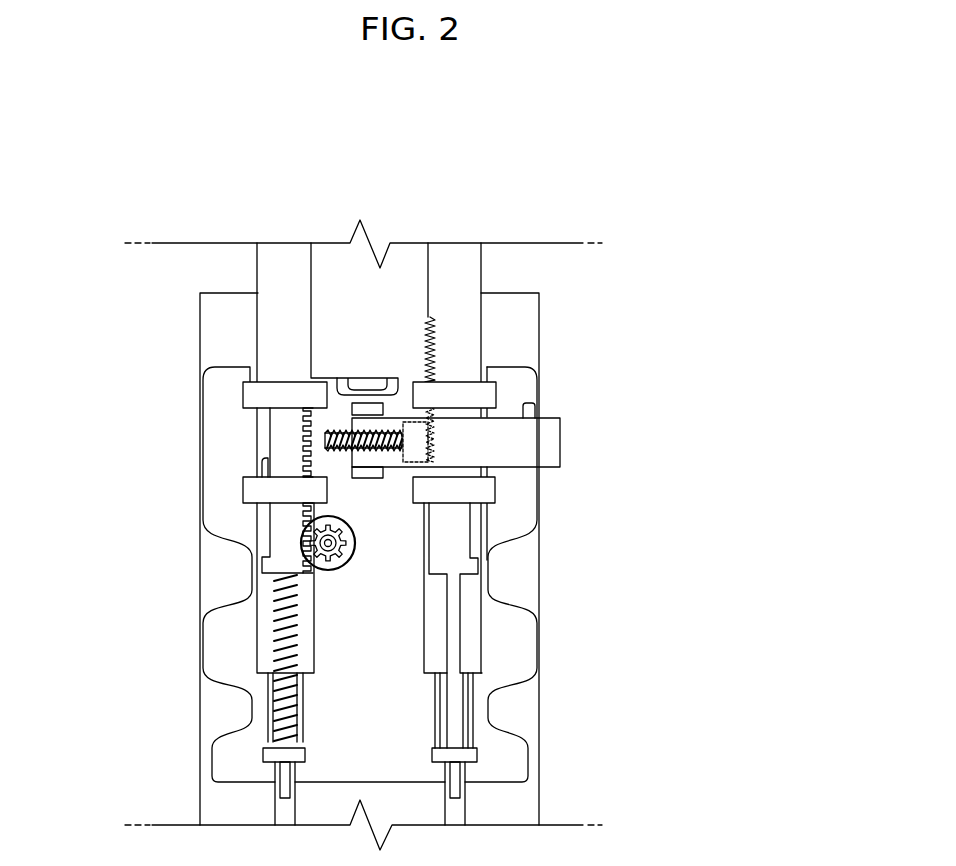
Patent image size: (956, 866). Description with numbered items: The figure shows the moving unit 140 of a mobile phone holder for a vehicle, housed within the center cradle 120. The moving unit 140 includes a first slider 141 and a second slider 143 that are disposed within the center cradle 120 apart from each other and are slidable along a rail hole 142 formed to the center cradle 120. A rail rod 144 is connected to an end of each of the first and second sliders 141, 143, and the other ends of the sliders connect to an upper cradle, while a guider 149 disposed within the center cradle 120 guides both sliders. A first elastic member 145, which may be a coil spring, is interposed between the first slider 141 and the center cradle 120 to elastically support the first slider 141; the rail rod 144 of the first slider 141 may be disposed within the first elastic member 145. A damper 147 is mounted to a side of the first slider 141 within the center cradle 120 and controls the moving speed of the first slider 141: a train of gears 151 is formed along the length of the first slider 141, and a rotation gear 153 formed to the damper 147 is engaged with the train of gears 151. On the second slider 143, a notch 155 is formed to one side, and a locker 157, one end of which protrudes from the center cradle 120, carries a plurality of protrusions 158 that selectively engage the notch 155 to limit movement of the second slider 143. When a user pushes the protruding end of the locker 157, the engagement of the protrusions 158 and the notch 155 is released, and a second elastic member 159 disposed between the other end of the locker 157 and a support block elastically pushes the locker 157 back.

The center cradle 120 is at (510, 323).
The moving unit 140 is at (138, 542).
The first slider 141 is at (275, 321).
The rail hole 142 is at (262, 655).
The second slider 143 is at (463, 323).
The rail rod 144 is at (272, 590).
The first elastic member 145 is at (276, 700).
The damper 147 is at (335, 582).
The guider 149 is at (254, 394).
The train of gears 151 is at (318, 466).
The rotation gear 153 is at (357, 562).
The notch 155 is at (424, 350).
The locker 157 is at (552, 445).
The protrusions 158 is at (438, 437).
The second elastic member 159 is at (340, 437).